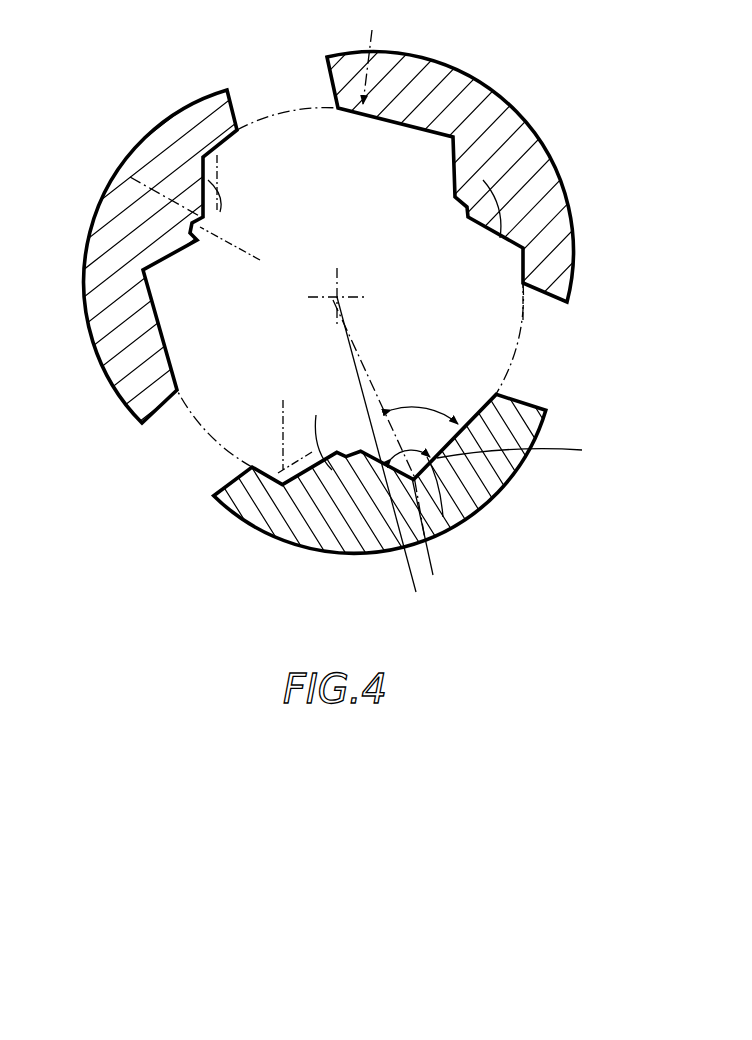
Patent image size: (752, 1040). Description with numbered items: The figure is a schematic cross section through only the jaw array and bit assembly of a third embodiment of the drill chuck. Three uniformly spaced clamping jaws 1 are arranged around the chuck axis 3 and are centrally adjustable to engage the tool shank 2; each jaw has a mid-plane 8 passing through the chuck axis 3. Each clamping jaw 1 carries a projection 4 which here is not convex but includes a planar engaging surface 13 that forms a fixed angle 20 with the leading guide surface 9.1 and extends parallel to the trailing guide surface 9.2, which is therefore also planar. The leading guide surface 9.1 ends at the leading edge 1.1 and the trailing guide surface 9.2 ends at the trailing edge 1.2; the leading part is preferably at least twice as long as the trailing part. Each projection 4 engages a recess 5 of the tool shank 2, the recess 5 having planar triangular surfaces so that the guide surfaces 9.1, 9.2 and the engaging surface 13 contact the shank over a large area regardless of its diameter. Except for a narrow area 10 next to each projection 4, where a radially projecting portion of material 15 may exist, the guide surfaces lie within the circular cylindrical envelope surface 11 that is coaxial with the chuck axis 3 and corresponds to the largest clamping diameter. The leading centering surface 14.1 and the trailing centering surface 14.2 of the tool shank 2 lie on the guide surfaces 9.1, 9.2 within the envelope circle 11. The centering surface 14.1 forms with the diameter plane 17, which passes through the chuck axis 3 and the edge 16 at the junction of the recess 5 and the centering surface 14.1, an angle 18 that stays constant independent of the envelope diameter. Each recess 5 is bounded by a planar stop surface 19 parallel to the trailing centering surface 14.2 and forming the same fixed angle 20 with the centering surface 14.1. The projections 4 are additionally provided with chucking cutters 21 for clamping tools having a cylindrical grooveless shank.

The clamping jaw 1 is at (175, 132).
The leading edge 1.1 is at (338, 110).
The trailing edge 1.2 is at (238, 138).
The tool shank 2 is at (530, 332).
The chuck axis 3 is at (334, 302).
The projection 4 is at (496, 240).
The recess 5 is at (468, 232).
The mid-plane 8 is at (408, 580).
The leading guide surface 9.1 is at (378, 125).
The trailing guide surface 9.2 is at (523, 285).
The narrow area 10 is at (437, 130).
The envelope surface 11 is at (131, 175).
The engaging surface 13 is at (453, 165).
The leading centering surface 14.1 is at (528, 453).
The trailing centering surface 14.2 is at (252, 495).
The radially projecting portion of material 15 is at (447, 144).
The edge 16 is at (443, 517).
The diameter plane 17 is at (352, 332).
The angle 18 is at (411, 408).
The stop surface 19 is at (245, 252).
The fixed angle 20 is at (416, 458).
The chucking cutter 21 is at (465, 218).